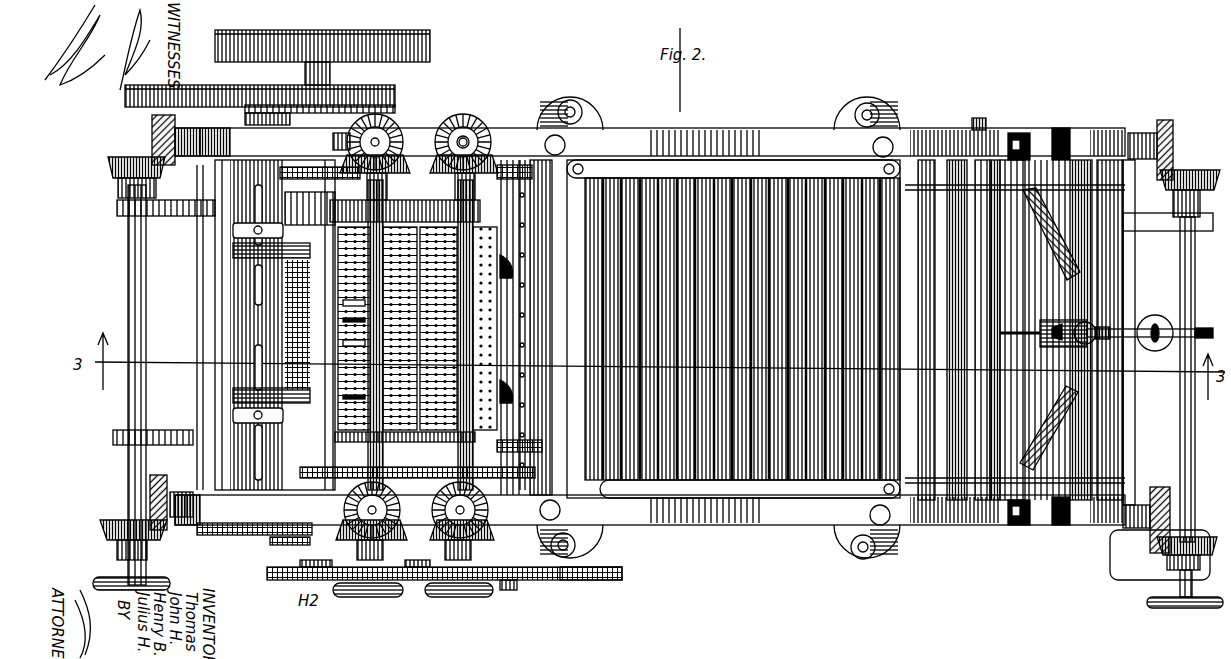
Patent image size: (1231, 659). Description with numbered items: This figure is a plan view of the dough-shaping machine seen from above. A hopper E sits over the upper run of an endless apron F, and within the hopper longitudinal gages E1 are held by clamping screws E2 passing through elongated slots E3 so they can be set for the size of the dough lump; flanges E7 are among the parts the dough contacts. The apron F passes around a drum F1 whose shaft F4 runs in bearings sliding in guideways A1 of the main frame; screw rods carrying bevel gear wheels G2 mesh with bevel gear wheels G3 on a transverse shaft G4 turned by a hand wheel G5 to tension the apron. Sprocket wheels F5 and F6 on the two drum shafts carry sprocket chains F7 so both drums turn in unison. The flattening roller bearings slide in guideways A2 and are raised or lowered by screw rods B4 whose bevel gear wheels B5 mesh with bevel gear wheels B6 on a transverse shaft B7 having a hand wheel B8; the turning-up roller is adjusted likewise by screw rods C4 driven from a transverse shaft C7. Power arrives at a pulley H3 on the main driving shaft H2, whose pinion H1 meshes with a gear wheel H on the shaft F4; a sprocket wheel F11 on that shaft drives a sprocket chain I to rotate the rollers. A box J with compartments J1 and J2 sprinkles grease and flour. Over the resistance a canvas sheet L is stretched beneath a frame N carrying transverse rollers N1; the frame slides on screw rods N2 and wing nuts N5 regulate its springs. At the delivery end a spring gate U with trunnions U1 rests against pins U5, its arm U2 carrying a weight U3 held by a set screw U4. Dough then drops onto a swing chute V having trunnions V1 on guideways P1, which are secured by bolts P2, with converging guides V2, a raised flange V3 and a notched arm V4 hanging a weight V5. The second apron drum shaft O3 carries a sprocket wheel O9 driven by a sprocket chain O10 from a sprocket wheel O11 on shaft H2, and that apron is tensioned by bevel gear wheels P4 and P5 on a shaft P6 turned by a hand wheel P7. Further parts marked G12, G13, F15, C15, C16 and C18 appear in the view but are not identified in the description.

The gear wheel H is at (192, 88).
The pinion H1 is at (380, 86).
The main driving shaft H2 is at (331, 78).
The pulley H3 is at (432, 42).
The shaft of drum F1 F4 is at (255, 115).
The guideways A1 is at (650, 142).
The guideways A2 is at (650, 529).
The transverse shaft G4 is at (128, 470).
The bevel gear G12 is at (170, 168).
The bevel gear G13 is at (112, 166).
The bevel gear wheels G2 is at (165, 462).
The bevel gear wheels G3 is at (104, 530).
The hand wheel G5 is at (172, 586).
The hopper E is at (230, 325).
The gages E1 is at (277, 323).
The clamping screws E2 is at (250, 417).
The elongated slots E3 is at (258, 207).
The flanges E7 is at (515, 265).
The block F15 is at (340, 200).
The box J is at (390, 325).
The compartment J1 is at (334, 316).
The compartment J2 is at (485, 328).
The drum F1 is at (336, 315).
The endless apron F is at (337, 392).
The sprocket wheels F5 is at (380, 445).
The transverse shaft B7 is at (368, 445).
The transverse shaft C7 is at (490, 447).
The sprocket chains F7 is at (530, 175).
The sheet L is at (538, 325).
The screw rods B4 is at (333, 142).
The bevel gear wheels B5 is at (400, 130).
The bevel gear wheels B6 is at (400, 170).
The screw rods C4 is at (465, 136).
The gear C15 is at (486, 135).
The bevel gear C16 is at (447, 180).
The sprocket chain I is at (197, 530).
The sprocket wheel F11 is at (222, 536).
The sprocket wheel O11 is at (275, 580).
The hand wheel B8 is at (360, 597).
The sprocket chain O10 is at (418, 581).
The hand crank C18 is at (452, 592).
The shaft O3 is at (510, 590).
The sprocket wheel O9 is at (590, 581).
The resistance frame N is at (738, 137).
The transverse rollers N1 is at (817, 178).
The screw rods N2 is at (550, 140).
The wing nuts N5 is at (600, 130).
The sprocket wheels F6 is at (1110, 478).
The pins U5 is at (980, 132).
The trunnions U1 is at (1005, 138).
The bolts P2 is at (1025, 336).
The trunnions V1 is at (1066, 130).
The guideways P1 is at (1110, 132).
The converging guides V2 is at (1045, 215).
The weight V5 is at (1158, 318).
The spring gate U is at (1040, 330).
The weight U3 is at (1090, 323).
The set screw U4 is at (1058, 318).
The arm U2 is at (1107, 343).
The raised flange V3 is at (1093, 385).
The notched arm V4 is at (1203, 328).
The swing chute V is at (1049, 225).
The bevel gear wheels P4 is at (1166, 128).
The bevel gear wheels P5 is at (1200, 172).
The shaft P6 is at (1182, 416).
The hand wheel P7 is at (1165, 608).